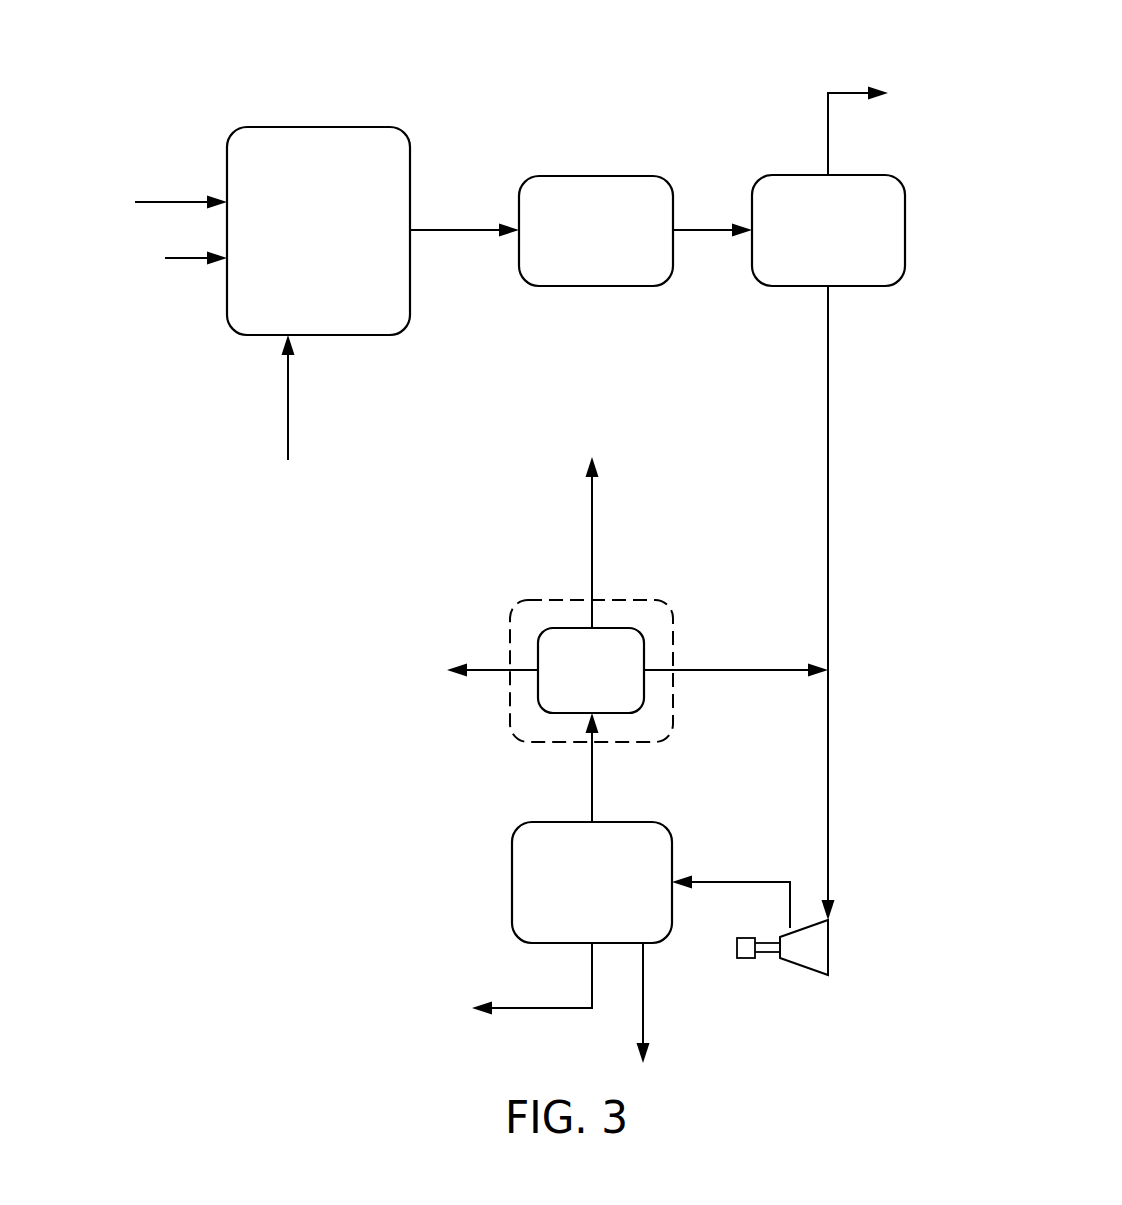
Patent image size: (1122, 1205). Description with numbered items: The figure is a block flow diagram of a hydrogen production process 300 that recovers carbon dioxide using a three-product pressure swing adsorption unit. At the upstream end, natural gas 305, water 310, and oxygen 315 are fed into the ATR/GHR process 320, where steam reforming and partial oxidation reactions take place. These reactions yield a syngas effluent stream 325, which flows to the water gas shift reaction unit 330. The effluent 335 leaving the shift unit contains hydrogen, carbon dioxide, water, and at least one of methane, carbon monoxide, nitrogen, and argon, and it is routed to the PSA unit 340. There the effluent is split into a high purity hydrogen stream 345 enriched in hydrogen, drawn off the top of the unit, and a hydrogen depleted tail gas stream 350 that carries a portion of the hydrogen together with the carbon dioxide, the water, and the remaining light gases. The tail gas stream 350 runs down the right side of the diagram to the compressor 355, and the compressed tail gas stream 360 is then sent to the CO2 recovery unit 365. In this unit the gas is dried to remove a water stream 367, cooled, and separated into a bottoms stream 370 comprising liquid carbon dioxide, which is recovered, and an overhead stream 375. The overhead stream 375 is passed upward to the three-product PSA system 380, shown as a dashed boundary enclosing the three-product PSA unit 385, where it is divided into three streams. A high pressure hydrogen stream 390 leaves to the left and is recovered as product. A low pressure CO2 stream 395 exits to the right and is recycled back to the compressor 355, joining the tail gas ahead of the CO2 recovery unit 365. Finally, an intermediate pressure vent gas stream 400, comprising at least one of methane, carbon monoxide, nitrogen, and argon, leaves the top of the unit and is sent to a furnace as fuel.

The hydrogen production process 300 is at (214, 92).
The natural gas 305 is at (156, 200).
The water 310 is at (180, 260).
The oxygen 315 is at (288, 426).
The ATR/GHR process 320 is at (318, 127).
The syngas effluent stream 325 is at (479, 230).
The water gas shift reaction unit 330 is at (595, 175).
The effluent 335 is at (711, 230).
The PSA unit 340 is at (863, 175).
The high purity hydrogen stream 345 is at (857, 93).
The hydrogen depleted tail gas stream 350 is at (828, 373).
The compressor 355 is at (830, 948).
The compressed tail gas stream 360 is at (733, 882).
The CO2 recovery unit 365 is at (555, 820).
The water stream 367 is at (643, 1012).
The bottoms stream 370 is at (533, 1010).
The overhead stream 375 is at (592, 765).
The three-product PSA system 380 is at (633, 600).
The three-product PSA unit 385 is at (569, 652).
The high pressure hydrogen stream 390 is at (475, 672).
The low pressure CO2 stream 395 is at (767, 672).
The intermediate pressure vent gas stream 400 is at (592, 508).